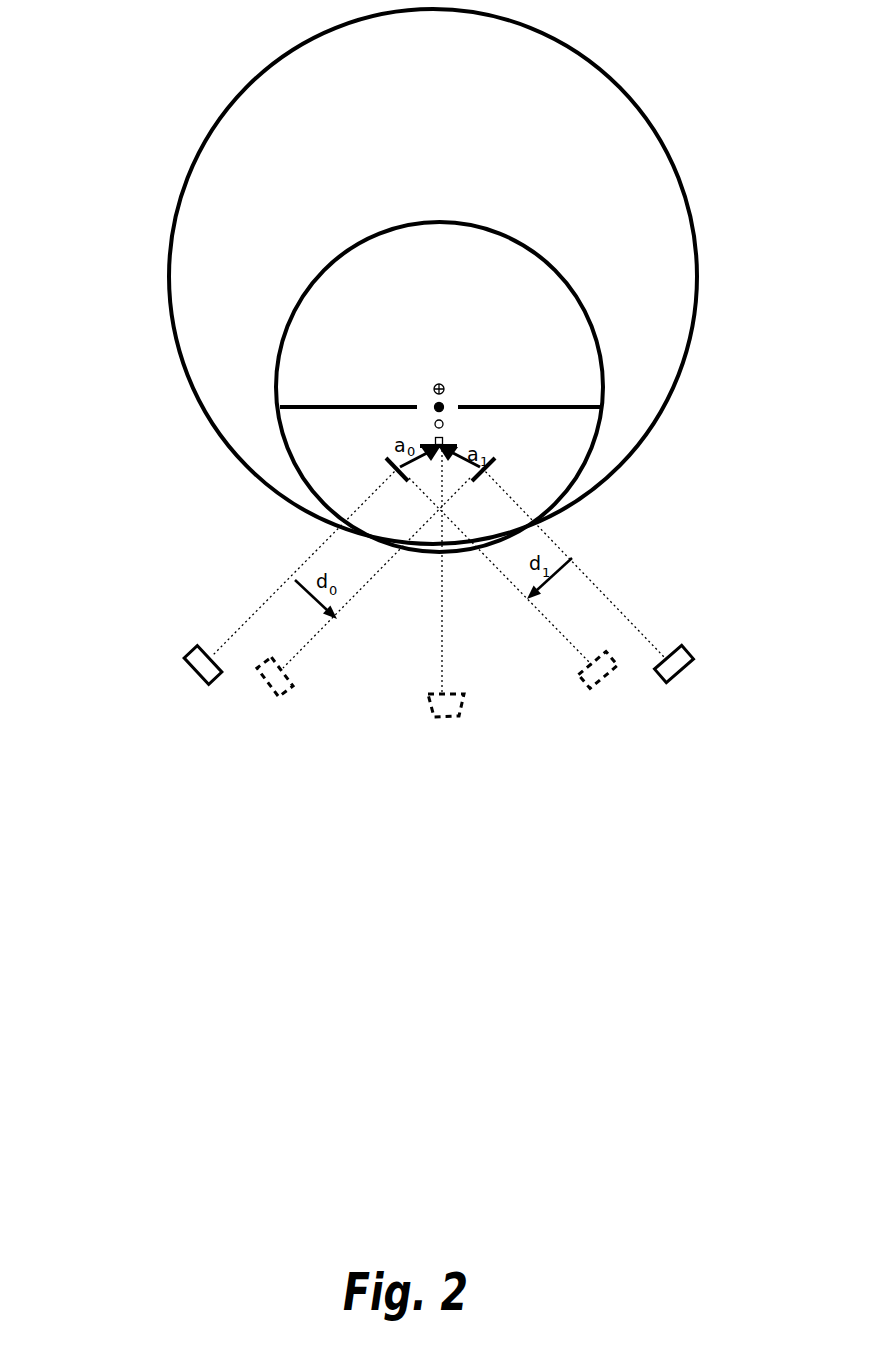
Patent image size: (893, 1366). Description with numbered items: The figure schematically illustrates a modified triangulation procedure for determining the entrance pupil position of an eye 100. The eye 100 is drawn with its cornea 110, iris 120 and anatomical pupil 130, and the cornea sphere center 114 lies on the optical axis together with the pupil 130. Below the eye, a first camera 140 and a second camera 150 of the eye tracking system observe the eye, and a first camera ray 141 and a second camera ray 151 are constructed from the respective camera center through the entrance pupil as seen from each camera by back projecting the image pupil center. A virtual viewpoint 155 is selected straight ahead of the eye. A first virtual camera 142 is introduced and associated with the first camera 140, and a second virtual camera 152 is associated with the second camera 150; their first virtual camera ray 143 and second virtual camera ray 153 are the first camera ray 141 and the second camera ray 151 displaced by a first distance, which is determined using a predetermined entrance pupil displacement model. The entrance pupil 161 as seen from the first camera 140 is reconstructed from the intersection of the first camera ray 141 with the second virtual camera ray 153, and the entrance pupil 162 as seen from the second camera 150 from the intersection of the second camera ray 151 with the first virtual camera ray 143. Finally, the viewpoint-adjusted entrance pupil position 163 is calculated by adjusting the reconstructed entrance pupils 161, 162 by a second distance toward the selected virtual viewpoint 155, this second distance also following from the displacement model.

The eye 100 is at (190, 160).
The cornea 110 is at (393, 226).
The cornea sphere center 114 is at (433, 383).
The pupil 130 is at (450, 400).
The iris 120 is at (315, 411).
The viewpoint-adjusted entrance pupil position 163 is at (447, 440).
The entrance pupil as seen from the first camera 161 is at (388, 463).
The entrance pupil as seen from the second camera 162 is at (497, 467).
The first camera ray 141 is at (240, 625).
The first camera 140 is at (193, 668).
The first virtual camera ray 143 is at (358, 600).
The first virtual camera 142 is at (265, 688).
The second camera ray 151 is at (623, 602).
The second camera 150 is at (672, 668).
The second virtual camera ray 153 is at (528, 605).
The second virtual camera 152 is at (595, 672).
The virtual viewpoint 155 is at (432, 713).